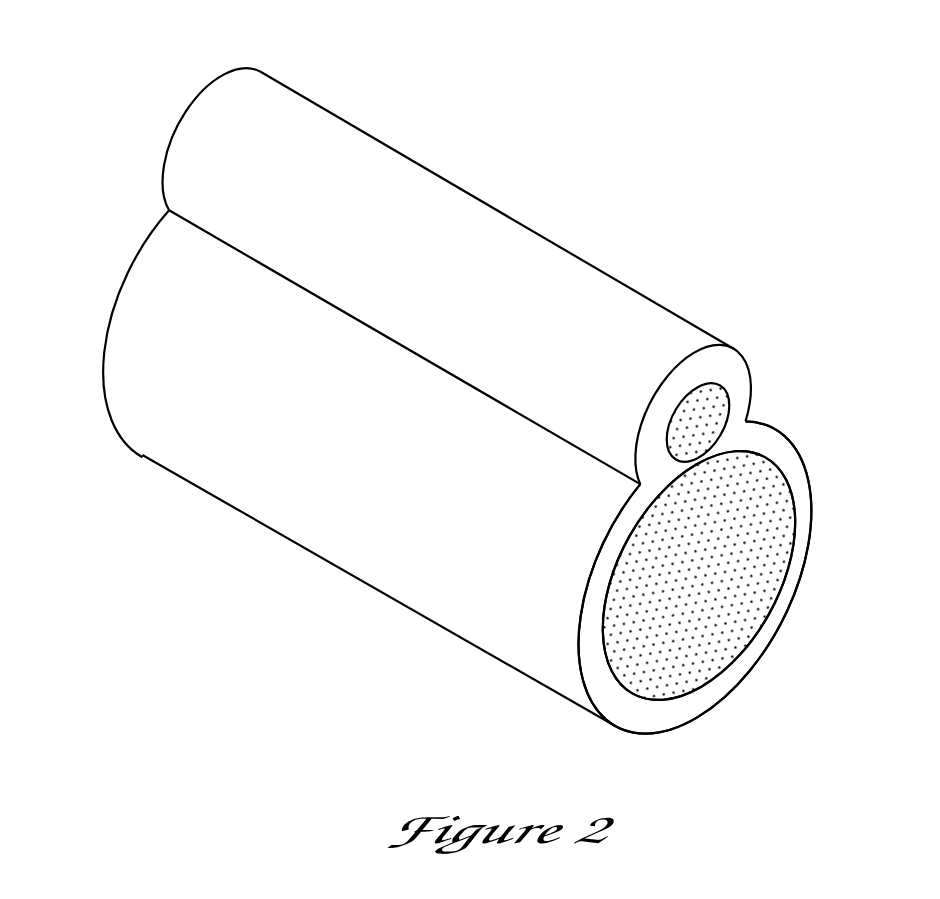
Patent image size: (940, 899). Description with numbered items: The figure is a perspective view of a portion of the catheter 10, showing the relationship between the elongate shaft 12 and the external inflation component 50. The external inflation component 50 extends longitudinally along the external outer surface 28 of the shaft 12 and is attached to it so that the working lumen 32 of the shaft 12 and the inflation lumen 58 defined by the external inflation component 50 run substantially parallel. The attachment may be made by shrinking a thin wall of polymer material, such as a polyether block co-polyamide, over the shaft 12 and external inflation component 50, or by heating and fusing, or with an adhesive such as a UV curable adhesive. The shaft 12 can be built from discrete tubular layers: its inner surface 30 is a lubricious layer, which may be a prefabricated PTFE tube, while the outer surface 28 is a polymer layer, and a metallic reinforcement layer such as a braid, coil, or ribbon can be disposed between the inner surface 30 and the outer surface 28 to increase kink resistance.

The catheter 10 is at (373, 108).
The elongate shaft 12 is at (347, 523).
The outer surface 28 is at (802, 580).
The inner surface 30 is at (747, 627).
The working lumen 32 is at (758, 490).
The external inflation component 50 is at (487, 220).
The inflation lumen 58 is at (710, 410).